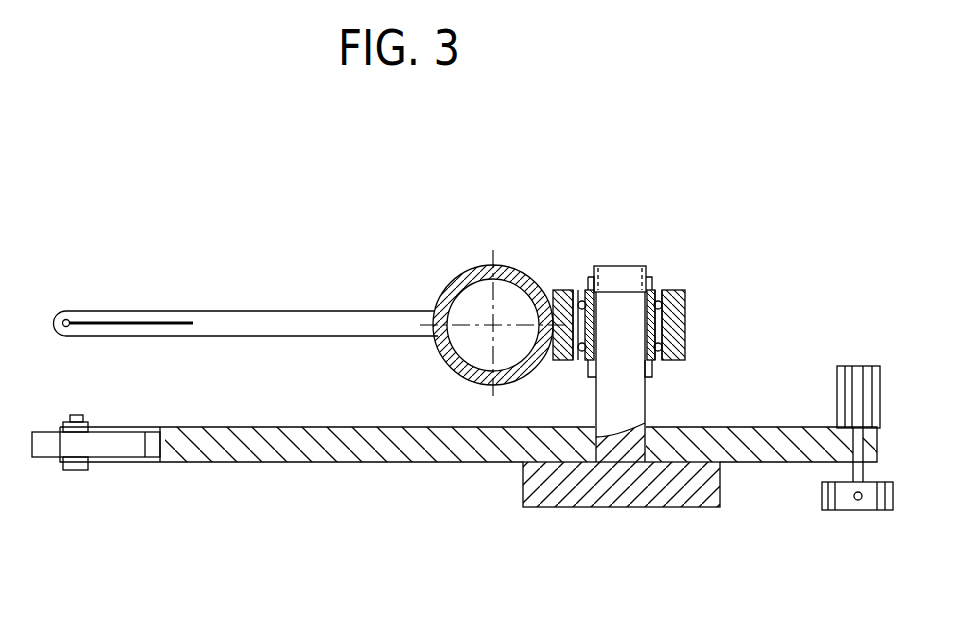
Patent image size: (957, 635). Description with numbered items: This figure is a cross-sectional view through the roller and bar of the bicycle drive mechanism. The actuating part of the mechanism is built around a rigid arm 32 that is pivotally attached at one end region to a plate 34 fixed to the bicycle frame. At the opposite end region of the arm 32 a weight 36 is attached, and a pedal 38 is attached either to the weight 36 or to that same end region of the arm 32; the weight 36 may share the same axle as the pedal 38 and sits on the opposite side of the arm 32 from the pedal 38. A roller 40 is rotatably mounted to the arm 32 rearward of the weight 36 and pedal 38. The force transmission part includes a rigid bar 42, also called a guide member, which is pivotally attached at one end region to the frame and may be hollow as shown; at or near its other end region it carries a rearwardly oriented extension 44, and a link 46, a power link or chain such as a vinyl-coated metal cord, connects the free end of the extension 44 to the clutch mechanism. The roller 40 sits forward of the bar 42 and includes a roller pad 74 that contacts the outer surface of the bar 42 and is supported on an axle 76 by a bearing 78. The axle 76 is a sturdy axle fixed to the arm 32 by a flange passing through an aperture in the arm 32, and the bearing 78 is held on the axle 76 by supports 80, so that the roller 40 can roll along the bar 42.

The rigid arm 32 is at (340, 462).
The plate 34 is at (105, 442).
The weight 36 is at (848, 366).
The pedal 38 is at (850, 503).
The roller 40 is at (700, 343).
The rigid bar 42 is at (462, 273).
The extension 44 is at (323, 328).
The link 46 is at (192, 310).
The roller pad 74 is at (556, 291).
The axle 76 is at (613, 492).
The bearing 78 is at (578, 289).
The supports 80 is at (588, 280).